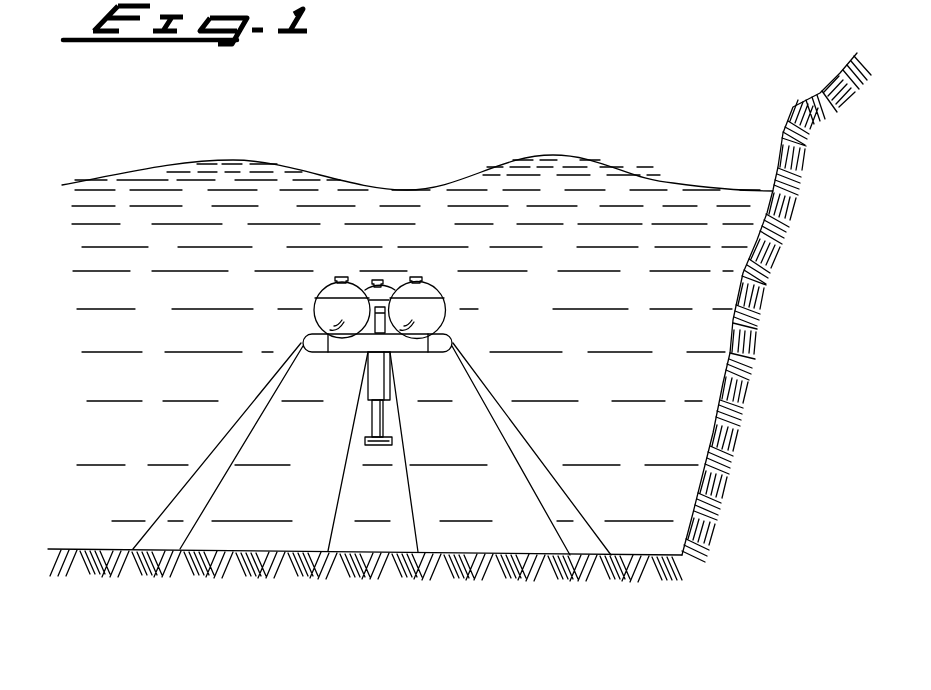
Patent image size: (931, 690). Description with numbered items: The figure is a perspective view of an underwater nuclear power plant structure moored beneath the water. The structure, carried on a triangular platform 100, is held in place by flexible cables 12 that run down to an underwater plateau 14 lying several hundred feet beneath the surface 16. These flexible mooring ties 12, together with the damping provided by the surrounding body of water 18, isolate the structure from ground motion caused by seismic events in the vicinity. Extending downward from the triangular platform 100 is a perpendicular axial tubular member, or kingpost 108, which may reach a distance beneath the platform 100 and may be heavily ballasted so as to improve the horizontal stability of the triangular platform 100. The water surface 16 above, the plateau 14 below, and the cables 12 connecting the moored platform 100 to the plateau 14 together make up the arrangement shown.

The flexible cables 12 is at (543, 460).
The underwater plateau 14 is at (57, 548).
The surface 16 is at (510, 160).
The surrounding body of water 18 is at (126, 415).
The triangular platform 100 is at (450, 339).
The kingpost 108 is at (377, 421).